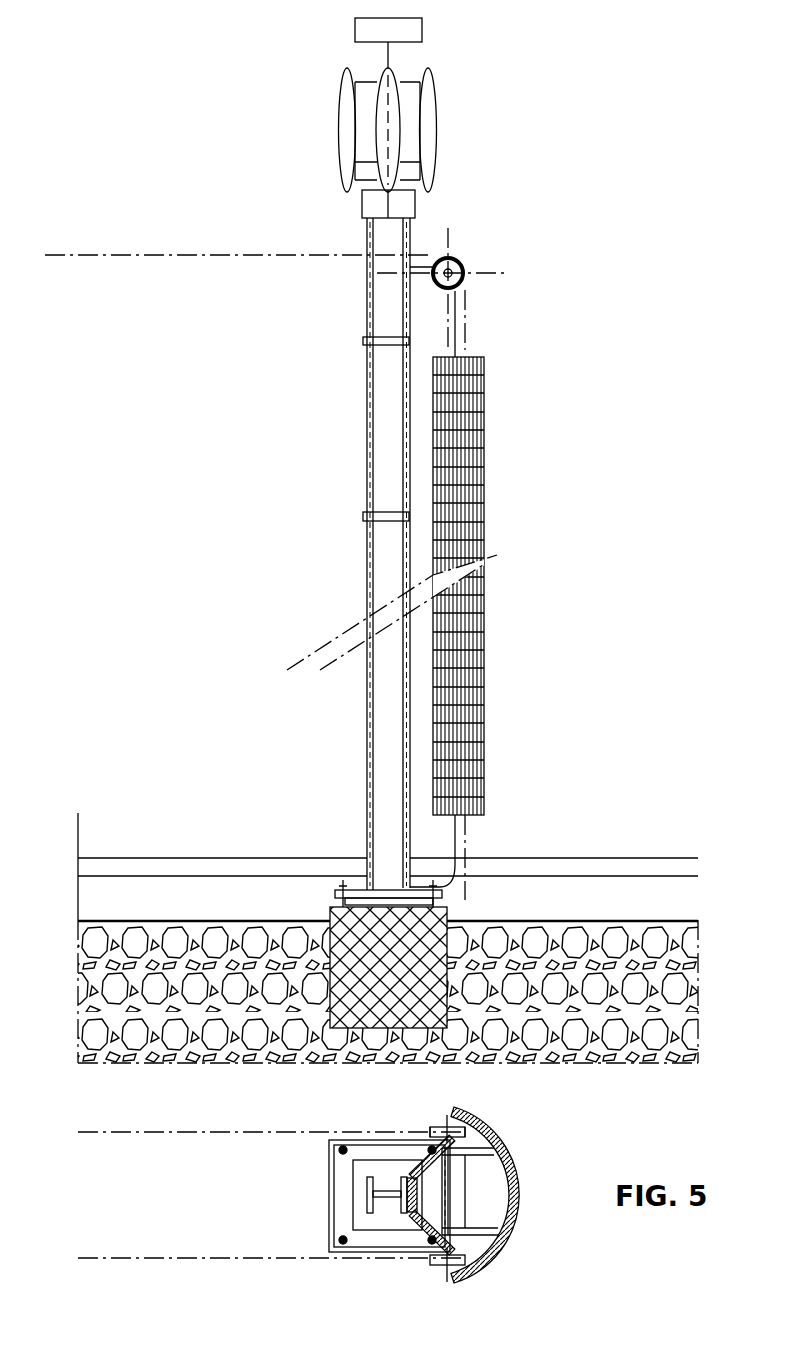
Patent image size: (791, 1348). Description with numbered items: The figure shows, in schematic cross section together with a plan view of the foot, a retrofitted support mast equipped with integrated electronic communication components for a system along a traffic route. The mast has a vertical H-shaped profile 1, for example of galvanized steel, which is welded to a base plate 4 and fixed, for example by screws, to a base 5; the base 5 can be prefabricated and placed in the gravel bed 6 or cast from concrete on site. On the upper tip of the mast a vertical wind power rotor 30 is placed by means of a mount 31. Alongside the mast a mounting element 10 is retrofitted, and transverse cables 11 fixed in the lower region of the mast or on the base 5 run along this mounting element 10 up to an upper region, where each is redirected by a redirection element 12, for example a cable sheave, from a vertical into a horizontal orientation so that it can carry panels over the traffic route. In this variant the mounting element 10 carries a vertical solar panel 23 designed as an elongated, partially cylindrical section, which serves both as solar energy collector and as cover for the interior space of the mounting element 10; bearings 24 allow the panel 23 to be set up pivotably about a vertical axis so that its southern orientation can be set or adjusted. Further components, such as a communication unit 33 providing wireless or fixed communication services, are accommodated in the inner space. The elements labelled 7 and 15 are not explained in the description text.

The H-shaped profile 1 is at (390, 391).
The base plate 4 is at (423, 891).
The base 5 is at (435, 965).
The gravel bed 6 is at (673, 943).
The anchor bolts 7 is at (345, 888).
The mounting element 10 is at (417, 417).
The transverse cables 11 is at (208, 256).
The redirection element 12 is at (467, 270).
The ground surface 15 is at (557, 925).
The vertical solar panel 23 is at (484, 491).
The bearings 24 is at (478, 1238).
The vertical wind power rotor 30 is at (437, 103).
The mount 31 is at (410, 207).
The communication unit 33 is at (410, 26).